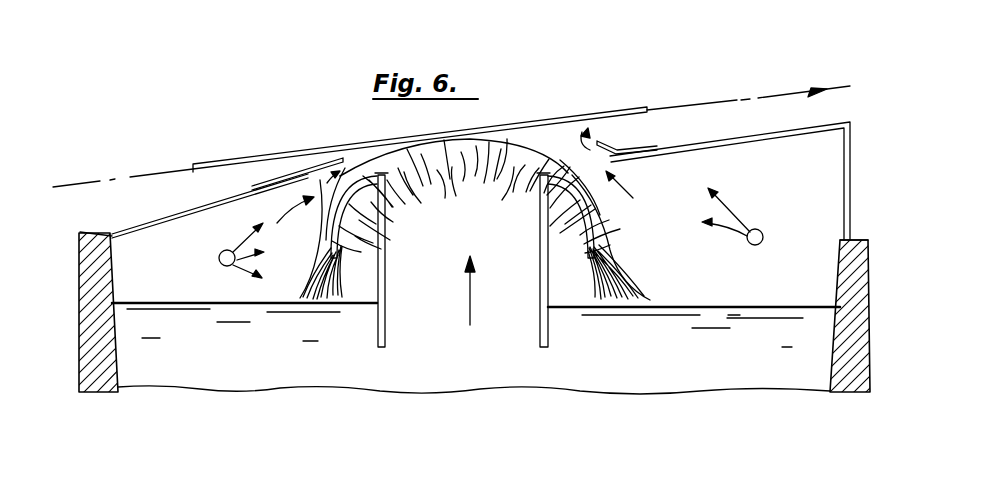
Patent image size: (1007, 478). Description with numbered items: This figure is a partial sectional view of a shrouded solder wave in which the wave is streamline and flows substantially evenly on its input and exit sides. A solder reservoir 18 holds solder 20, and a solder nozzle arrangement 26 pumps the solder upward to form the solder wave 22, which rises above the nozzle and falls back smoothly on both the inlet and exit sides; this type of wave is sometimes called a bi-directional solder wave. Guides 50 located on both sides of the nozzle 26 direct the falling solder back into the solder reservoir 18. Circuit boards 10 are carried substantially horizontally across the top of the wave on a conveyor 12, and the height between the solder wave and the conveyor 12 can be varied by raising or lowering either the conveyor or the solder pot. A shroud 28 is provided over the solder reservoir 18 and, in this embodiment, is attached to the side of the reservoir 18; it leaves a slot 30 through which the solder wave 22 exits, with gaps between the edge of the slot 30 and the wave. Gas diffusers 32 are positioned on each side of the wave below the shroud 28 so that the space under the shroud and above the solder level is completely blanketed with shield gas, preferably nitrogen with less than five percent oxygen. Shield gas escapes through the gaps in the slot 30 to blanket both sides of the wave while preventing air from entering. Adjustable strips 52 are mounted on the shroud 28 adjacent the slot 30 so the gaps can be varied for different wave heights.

The circuit board 10 is at (610, 110).
The conveyor 12 is at (153, 175).
The solder reservoir 18 is at (118, 358).
The solder 20 is at (447, 370).
The solder wave 22 is at (483, 140).
The solder nozzle arrangement 26 is at (550, 327).
The shroud 28 is at (157, 220).
The slot 30 is at (355, 160).
The gas diffuser 32 is at (218, 258).
The guide 50 is at (343, 235).
The adjustable strip 52 is at (310, 175).